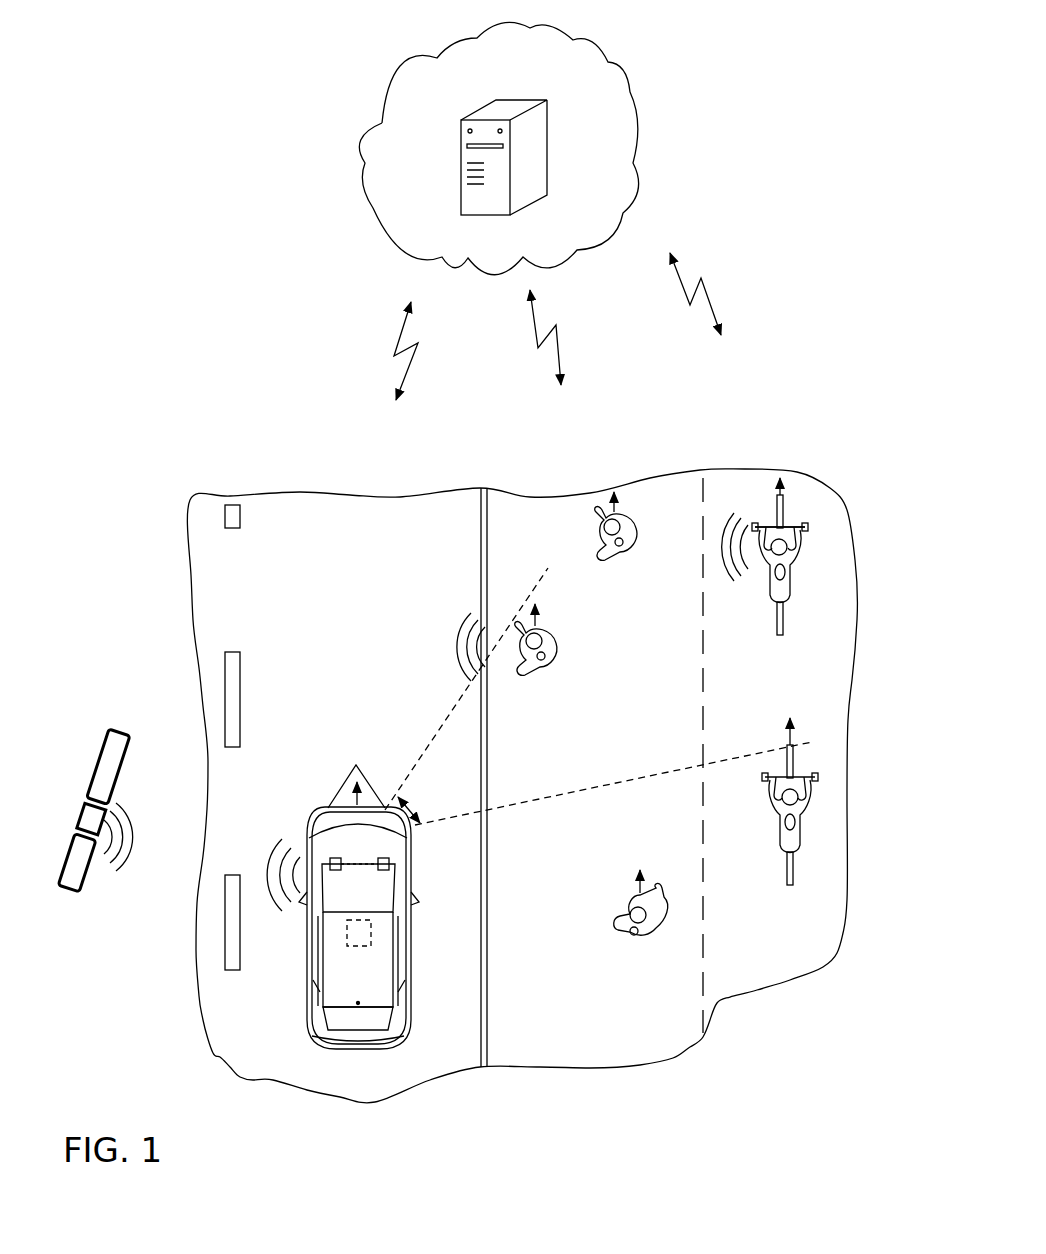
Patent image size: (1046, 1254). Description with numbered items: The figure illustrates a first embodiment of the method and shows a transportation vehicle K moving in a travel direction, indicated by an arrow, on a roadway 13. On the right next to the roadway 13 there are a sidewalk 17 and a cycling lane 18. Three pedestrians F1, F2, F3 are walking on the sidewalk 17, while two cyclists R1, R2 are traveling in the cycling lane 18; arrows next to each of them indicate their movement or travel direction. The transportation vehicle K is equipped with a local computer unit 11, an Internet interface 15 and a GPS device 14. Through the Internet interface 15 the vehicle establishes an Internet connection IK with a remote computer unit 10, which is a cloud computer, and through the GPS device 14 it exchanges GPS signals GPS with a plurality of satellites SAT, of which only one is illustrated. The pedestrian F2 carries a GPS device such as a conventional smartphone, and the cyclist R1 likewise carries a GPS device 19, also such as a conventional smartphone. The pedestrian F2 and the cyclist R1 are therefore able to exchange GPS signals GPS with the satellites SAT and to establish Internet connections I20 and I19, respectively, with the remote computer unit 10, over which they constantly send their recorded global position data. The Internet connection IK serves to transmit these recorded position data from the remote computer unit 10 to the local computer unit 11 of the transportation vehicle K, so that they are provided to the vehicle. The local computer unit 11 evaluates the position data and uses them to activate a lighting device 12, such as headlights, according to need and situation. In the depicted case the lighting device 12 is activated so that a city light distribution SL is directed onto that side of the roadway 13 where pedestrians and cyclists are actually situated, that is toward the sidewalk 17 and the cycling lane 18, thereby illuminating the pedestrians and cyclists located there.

The remote computer unit 10 is at (557, 90).
The Internet connection IK is at (407, 375).
The Internet connection I20 is at (558, 347).
The Internet connection I19 is at (706, 293).
The roadway 13 is at (363, 533).
The sidewalk 17 is at (555, 1020).
The cycling lane 18 is at (782, 953).
The GPS signals GPS is at (466, 620).
The satellite SAT is at (102, 773).
The pedestrian F1 is at (631, 533).
The pedestrian F2 is at (547, 640).
The pedestrian F3 is at (650, 937).
The cyclist R1 is at (800, 555).
The cyclist R2 is at (797, 828).
The GPS device 19 is at (790, 527).
The transportation vehicle K is at (294, 1051).
The lighting device 12 is at (356, 774).
The GPS device 14 is at (334, 865).
The Internet interface 15 is at (384, 865).
The local computer unit 11 is at (370, 936).
The city light distribution SL is at (413, 806).